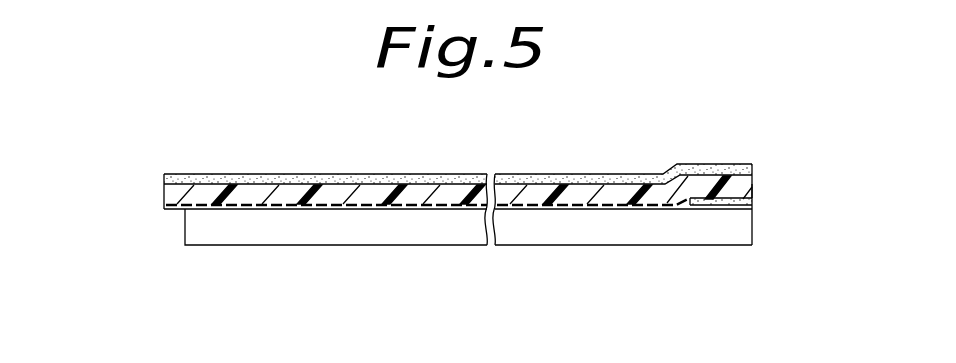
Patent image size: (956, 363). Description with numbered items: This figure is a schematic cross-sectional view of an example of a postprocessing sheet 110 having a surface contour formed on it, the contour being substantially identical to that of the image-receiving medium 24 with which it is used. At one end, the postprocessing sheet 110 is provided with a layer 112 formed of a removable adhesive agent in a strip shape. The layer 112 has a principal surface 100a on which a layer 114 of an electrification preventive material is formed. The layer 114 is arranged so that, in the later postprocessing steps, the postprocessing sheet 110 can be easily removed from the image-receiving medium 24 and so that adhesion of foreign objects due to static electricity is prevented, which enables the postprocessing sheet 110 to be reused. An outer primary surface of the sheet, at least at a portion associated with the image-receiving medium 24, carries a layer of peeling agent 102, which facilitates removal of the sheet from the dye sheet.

The image-receiving medium 24 is at (231, 245).
The principal surface 100a is at (368, 190).
The layer of peeling agent 102 is at (598, 173).
The postprocessing sheet 110 is at (752, 182).
The layer 112 is at (752, 200).
The layer of electrification preventive material 114 is at (446, 207).